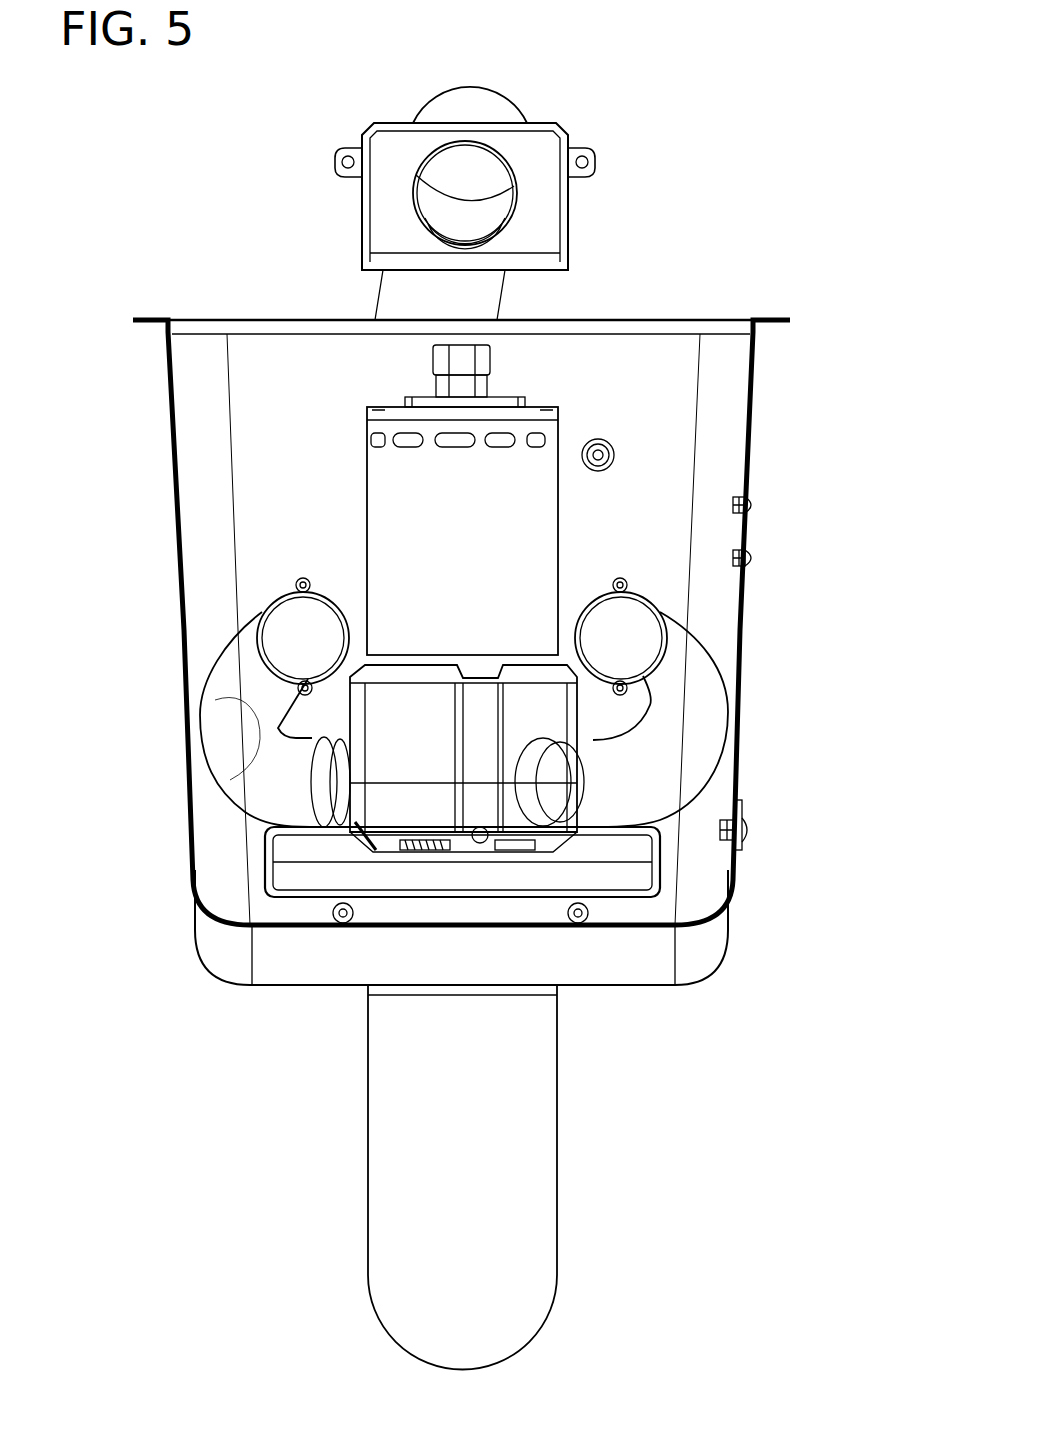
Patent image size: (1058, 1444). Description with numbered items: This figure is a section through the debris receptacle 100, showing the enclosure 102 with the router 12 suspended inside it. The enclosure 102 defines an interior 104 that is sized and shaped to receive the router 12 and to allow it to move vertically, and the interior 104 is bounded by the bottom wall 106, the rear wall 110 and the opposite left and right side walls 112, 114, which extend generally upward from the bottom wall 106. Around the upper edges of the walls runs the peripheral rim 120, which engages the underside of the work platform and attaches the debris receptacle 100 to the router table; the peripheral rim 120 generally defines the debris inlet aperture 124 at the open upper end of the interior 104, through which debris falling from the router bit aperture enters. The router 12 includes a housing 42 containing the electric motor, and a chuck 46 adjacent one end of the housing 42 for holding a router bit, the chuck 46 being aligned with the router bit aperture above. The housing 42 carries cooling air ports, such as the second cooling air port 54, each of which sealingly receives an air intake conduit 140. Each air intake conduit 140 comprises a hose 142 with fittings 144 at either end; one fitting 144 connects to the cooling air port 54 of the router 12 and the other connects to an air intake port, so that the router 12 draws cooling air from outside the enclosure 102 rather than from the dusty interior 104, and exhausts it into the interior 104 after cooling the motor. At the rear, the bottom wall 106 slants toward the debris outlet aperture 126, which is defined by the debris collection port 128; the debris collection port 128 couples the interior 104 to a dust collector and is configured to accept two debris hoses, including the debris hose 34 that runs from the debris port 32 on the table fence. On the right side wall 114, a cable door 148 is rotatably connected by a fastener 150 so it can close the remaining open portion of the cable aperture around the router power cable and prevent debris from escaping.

The debris receptacle 100 is at (810, 188).
The peripheral rim 120 is at (795, 300).
The debris inlet aperture 124 is at (278, 330).
The enclosure 102 is at (160, 567).
The left side wall 112 is at (170, 410).
The right side wall 114 is at (750, 445).
The interior 104 is at (325, 425).
The bottom wall 106 is at (297, 968).
The debris outlet aperture 126 is at (637, 869).
The debris collection port 128 is at (425, 897).
The cable door 148 is at (745, 810).
The fastener 150 is at (755, 832).
The router 12 is at (575, 402).
The housing 42 is at (388, 480).
The chuck 46 is at (506, 374).
The rear wall 110 is at (665, 511).
The second cooling air port 54 is at (533, 810).
The air intake conduit 140 is at (200, 657).
The hose 142 is at (272, 620).
The fittings 144 is at (323, 598).
The debris port 32 is at (560, 137).
The debris hose 34 is at (525, 78).